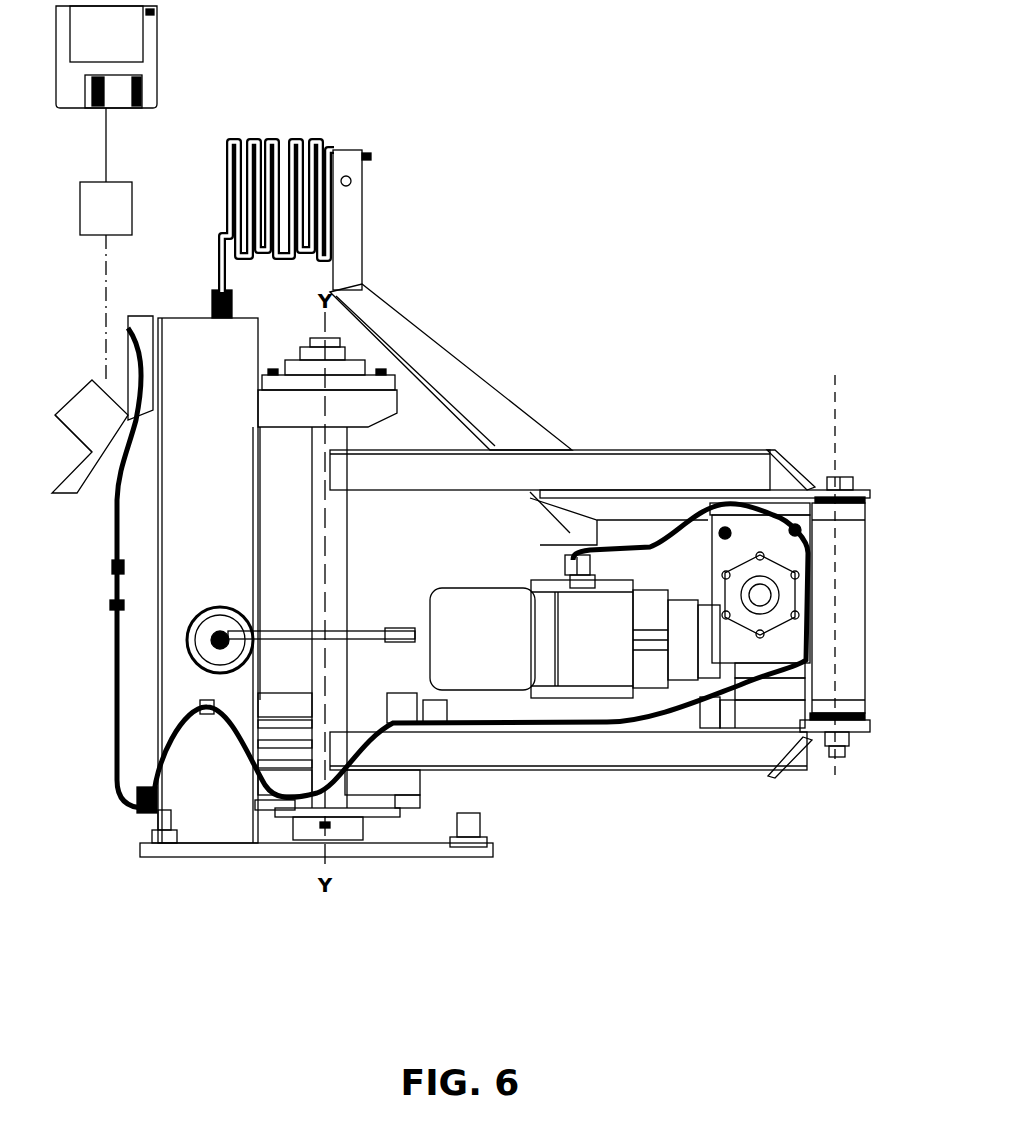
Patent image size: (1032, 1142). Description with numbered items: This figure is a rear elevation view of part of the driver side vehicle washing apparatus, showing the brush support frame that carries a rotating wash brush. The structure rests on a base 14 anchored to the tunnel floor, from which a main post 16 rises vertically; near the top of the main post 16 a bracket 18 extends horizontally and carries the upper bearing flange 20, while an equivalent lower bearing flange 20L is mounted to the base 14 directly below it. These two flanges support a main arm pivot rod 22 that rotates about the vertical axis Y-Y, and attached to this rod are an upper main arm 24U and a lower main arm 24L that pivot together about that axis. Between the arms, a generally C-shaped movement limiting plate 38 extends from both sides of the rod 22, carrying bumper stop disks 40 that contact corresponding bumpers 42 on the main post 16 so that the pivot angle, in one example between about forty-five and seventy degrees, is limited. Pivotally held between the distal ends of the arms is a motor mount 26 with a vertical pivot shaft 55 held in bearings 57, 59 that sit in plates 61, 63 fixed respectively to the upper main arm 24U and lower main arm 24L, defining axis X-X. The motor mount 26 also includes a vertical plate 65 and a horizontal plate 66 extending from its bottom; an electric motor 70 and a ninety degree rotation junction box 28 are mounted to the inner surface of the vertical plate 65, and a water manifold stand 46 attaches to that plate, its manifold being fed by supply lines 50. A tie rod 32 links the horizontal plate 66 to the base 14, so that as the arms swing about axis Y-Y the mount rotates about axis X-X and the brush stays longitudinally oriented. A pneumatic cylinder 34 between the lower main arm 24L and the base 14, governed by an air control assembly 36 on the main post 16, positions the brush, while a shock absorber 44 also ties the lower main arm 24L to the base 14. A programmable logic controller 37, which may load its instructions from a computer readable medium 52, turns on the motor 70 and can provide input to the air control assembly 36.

The base 14 is at (200, 858).
The main post 16 is at (178, 318).
The bracket 18 is at (368, 405).
The bearing flange 20 is at (368, 352).
The lower bearing flange 20L is at (347, 830).
The main arm pivot rod 22 is at (347, 542).
The upper main arm 24U is at (610, 452).
The lower main arm 24L is at (547, 770).
The motor mount 26 is at (845, 547).
The 90 degree rotation junction box 28 is at (737, 697).
The tie rod 32 is at (290, 748).
The cylinder 34 is at (372, 800).
The air control assembly 36 is at (106, 404).
The programmable logic controller 37 is at (94, 221).
The movement limiting plate 38 is at (383, 632).
The bumper stop disk 40 is at (203, 648).
The bumper 42 is at (207, 670).
The shock absorber 44 is at (272, 703).
The water manifold stand 46 is at (513, 425).
The supply lines 50 is at (272, 138).
The computer readable medium 52 is at (94, 46).
The pivot shaft 55 is at (850, 655).
The bearing 57 is at (830, 478).
The bearing 59 is at (848, 752).
The plate 61 is at (817, 487).
The plate 63 is at (813, 723).
The vertical plate 65 is at (790, 637).
The horizontal plate 66 is at (733, 663).
The electric motor 70 is at (473, 600).